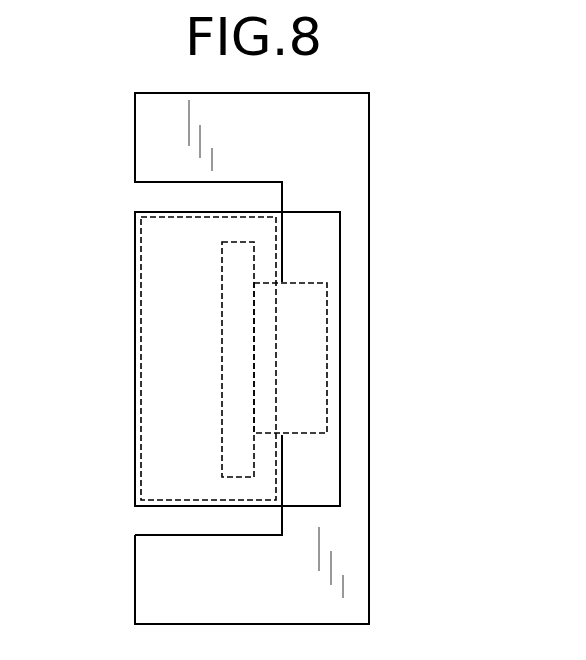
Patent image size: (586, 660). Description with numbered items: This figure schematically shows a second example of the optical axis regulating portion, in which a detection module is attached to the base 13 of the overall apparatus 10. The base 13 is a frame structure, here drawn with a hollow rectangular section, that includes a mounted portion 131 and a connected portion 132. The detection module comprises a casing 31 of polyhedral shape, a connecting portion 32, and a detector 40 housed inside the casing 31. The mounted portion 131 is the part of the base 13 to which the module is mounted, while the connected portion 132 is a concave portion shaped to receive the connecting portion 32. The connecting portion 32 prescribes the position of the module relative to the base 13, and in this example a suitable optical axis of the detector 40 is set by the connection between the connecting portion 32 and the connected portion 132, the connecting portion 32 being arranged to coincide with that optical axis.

The electronic device 10 is at (470, 322).
The base 13 is at (369, 120).
The mounted portion 131 is at (231, 533).
The connected portion 132 is at (330, 322).
The casing 31 is at (135, 237).
The connecting portion 32 is at (295, 418).
The detector 40 is at (223, 440).